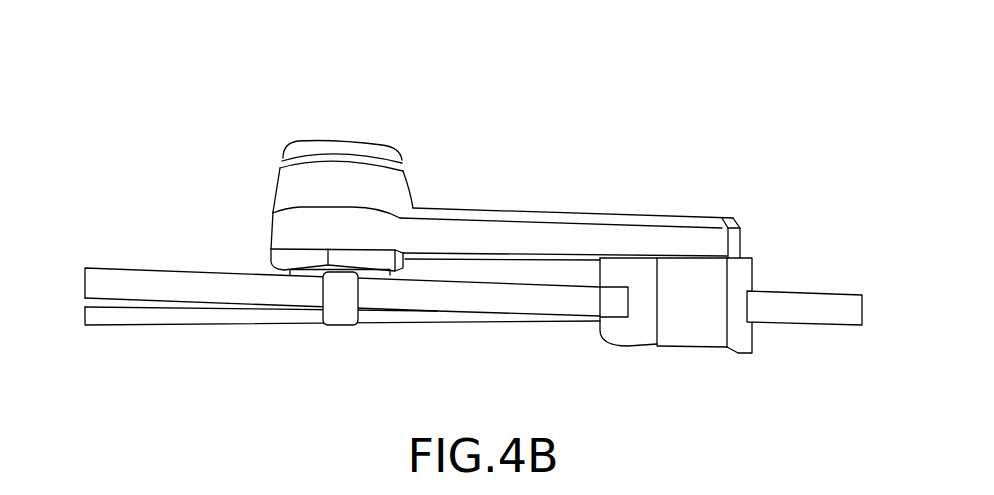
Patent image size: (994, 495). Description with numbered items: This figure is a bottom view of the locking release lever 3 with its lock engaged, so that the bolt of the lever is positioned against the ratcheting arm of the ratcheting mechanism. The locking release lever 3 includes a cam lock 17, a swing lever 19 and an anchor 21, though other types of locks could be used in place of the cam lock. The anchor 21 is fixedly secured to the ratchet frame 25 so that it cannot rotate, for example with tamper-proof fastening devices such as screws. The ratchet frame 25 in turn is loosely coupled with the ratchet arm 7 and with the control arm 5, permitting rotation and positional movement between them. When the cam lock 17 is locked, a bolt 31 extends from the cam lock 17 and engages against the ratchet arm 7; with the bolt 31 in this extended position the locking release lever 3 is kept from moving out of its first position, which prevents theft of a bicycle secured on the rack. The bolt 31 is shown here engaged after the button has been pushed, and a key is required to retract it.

The locking release lever 3 is at (652, 120).
The control arm 5 is at (139, 317).
The ratchet arm 7 is at (157, 278).
The cam lock 17 is at (339, 173).
The swing lever 19 is at (521, 235).
The anchor 21 is at (717, 243).
The ratchet frame 25 is at (693, 318).
The bolt 31 is at (340, 320).